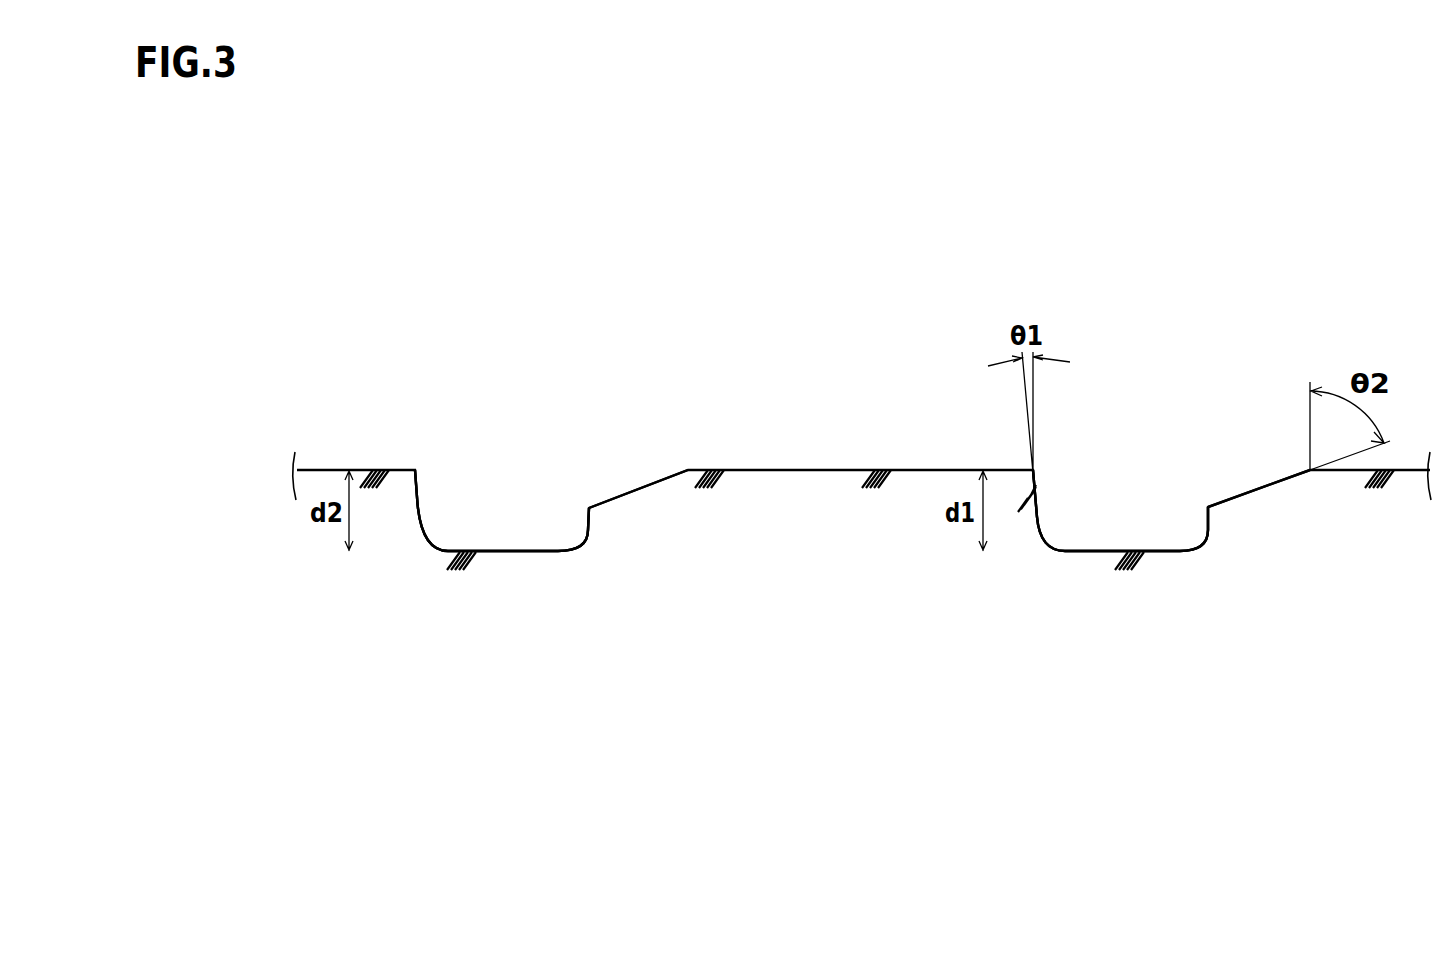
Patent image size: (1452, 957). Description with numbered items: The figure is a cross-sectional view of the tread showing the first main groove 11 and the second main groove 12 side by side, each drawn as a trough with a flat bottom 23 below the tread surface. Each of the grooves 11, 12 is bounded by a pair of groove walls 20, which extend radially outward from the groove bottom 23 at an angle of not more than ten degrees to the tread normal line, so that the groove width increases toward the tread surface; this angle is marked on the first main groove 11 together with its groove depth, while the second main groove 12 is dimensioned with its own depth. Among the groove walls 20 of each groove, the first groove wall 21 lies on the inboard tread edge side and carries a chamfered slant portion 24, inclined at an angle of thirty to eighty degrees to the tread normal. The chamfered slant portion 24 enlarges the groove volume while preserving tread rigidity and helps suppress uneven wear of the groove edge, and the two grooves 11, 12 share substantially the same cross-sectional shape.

The first main groove 11 is at (1170, 456).
The second main groove 12 is at (534, 463).
The groove walls 20 is at (416, 492).
The first groove wall 21 is at (588, 520).
The bottom of groove 23 is at (505, 536).
The chamfered slant portion 24 is at (658, 482).